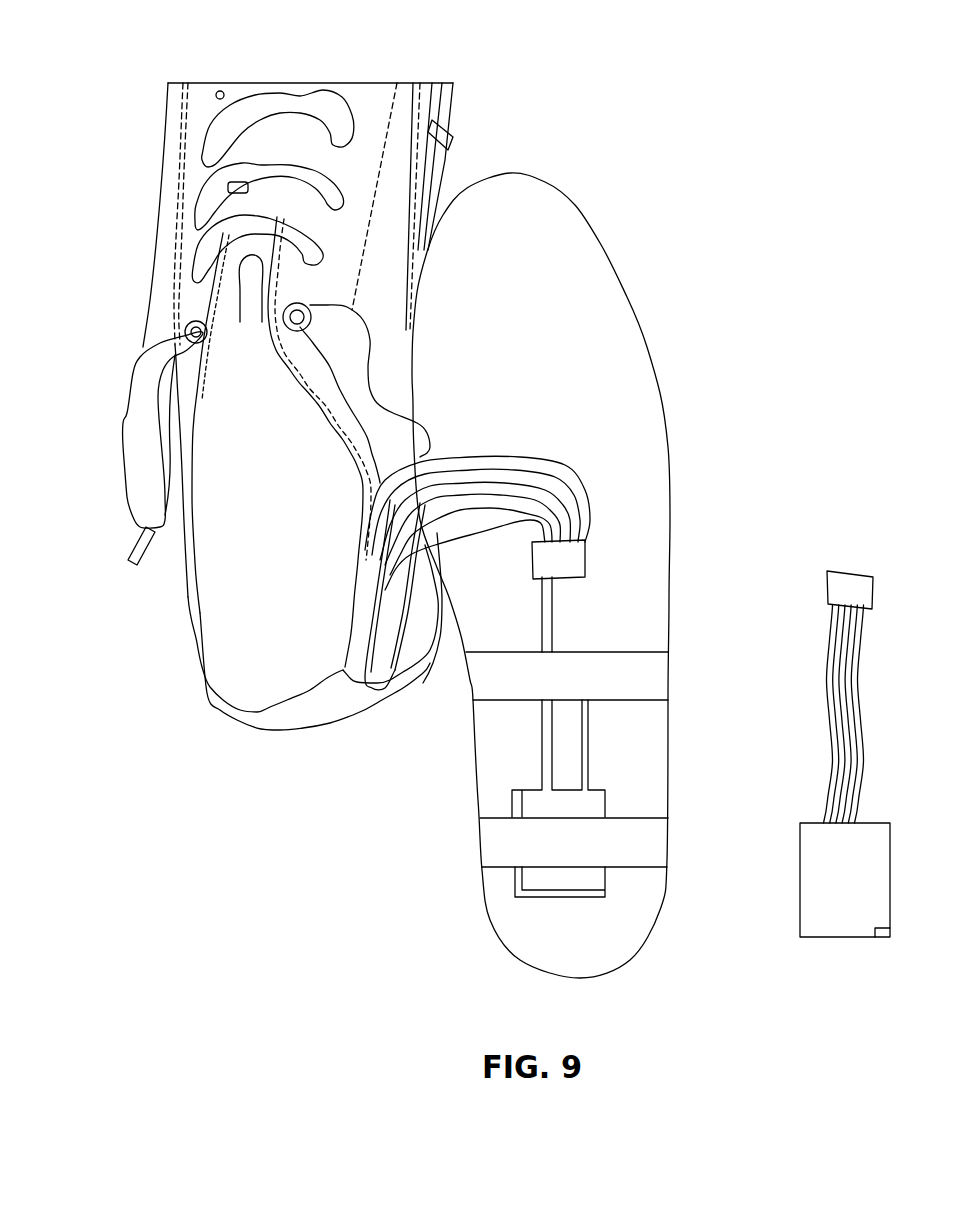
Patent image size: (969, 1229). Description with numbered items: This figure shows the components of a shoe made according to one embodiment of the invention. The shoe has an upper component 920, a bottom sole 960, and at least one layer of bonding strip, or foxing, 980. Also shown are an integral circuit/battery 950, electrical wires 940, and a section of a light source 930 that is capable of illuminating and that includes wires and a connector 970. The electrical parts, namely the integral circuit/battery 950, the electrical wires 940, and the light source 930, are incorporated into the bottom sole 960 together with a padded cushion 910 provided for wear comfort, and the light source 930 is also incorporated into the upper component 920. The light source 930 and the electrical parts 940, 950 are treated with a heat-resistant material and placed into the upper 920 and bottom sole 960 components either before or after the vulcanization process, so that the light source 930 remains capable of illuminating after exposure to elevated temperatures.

The padded cushion 910 is at (495, 890).
The upper component 920 is at (278, 715).
The light source 930 is at (400, 683).
The electrical wires 940 is at (837, 717).
The integral circuit/battery 950 is at (840, 910).
The bottom sole 960 is at (250, 567).
The connector 970 is at (568, 557).
The bonding strip (foxing) 980 is at (450, 102).